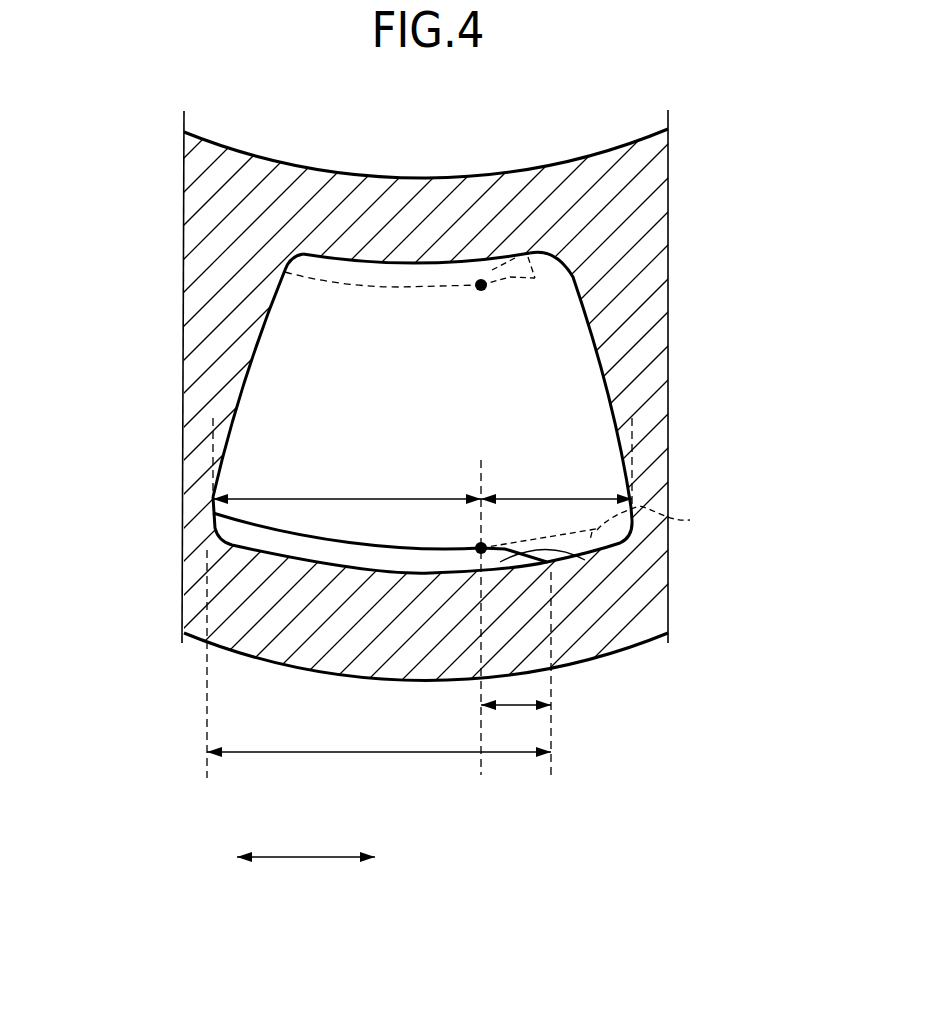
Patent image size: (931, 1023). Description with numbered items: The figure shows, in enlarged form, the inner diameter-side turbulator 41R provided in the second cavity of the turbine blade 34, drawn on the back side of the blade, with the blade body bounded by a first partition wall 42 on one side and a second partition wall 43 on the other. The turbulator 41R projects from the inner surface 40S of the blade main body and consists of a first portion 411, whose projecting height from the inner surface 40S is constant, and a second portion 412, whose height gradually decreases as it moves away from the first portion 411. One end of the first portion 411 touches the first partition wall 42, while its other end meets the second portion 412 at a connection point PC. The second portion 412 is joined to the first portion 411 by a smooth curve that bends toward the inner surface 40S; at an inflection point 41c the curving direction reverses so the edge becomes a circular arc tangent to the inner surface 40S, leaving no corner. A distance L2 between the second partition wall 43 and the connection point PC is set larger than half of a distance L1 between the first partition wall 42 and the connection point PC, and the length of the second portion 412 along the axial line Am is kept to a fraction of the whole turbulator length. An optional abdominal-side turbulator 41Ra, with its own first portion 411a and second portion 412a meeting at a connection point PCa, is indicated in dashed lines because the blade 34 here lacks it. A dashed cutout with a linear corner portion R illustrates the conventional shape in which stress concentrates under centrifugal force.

The first partition wall 42 is at (207, 392).
The second partition wall 43 is at (640, 393).
The inner diameter-side turbulator 41R is at (316, 491).
The inner diameter-side turbulator on abdominal side 41Ra is at (317, 325).
The first portion 411 is at (368, 572).
The first portion 411a is at (430, 279).
The second portion 412 is at (585, 552).
The second portion 412a is at (535, 278).
The inflection point 41c is at (563, 557).
The inner surface of blade main body 40S is at (272, 553).
The connection point PC is at (481, 548).
The connection point PCa is at (487, 287).
The corner portion R is at (690, 520).
The distance between first partition wall and connection point L1 is at (347, 461).
The distance between second partition wall and connection point L2 is at (556, 596).
The turbine blade 34 is at (513, 784).
The axial line Am is at (306, 847).